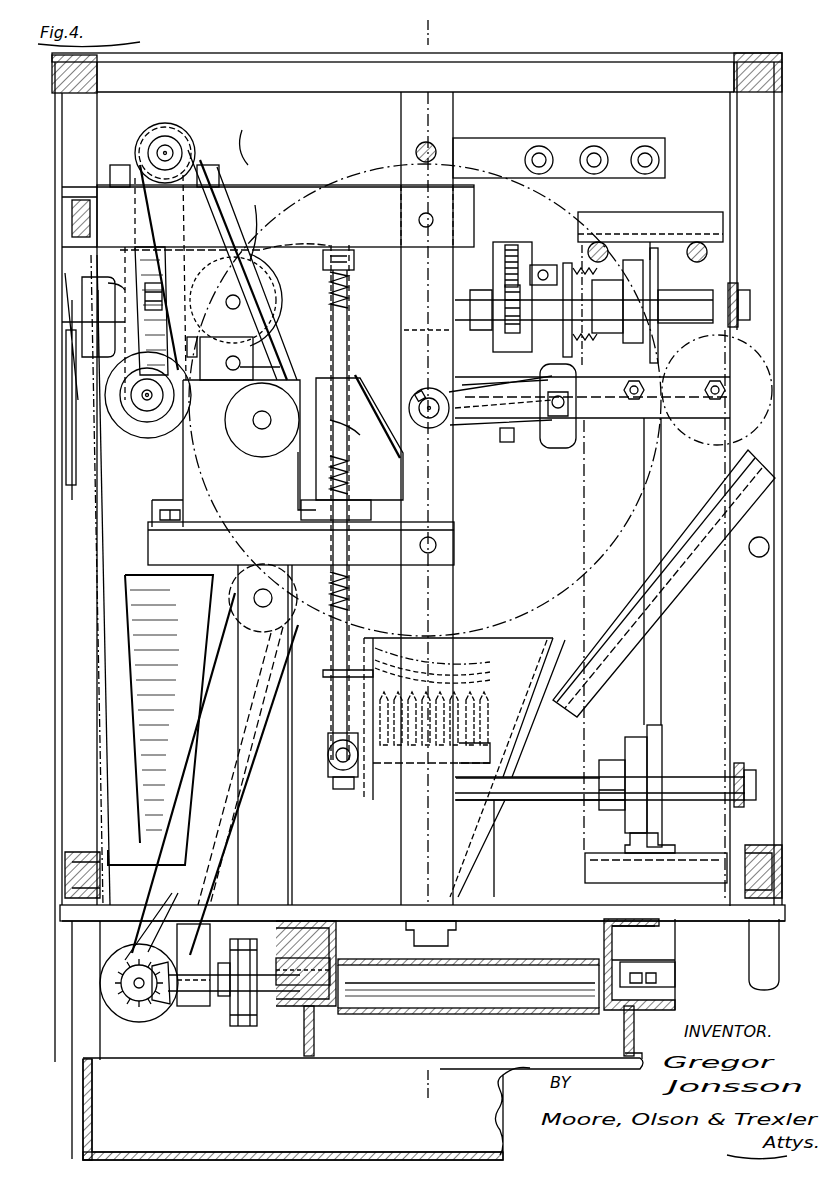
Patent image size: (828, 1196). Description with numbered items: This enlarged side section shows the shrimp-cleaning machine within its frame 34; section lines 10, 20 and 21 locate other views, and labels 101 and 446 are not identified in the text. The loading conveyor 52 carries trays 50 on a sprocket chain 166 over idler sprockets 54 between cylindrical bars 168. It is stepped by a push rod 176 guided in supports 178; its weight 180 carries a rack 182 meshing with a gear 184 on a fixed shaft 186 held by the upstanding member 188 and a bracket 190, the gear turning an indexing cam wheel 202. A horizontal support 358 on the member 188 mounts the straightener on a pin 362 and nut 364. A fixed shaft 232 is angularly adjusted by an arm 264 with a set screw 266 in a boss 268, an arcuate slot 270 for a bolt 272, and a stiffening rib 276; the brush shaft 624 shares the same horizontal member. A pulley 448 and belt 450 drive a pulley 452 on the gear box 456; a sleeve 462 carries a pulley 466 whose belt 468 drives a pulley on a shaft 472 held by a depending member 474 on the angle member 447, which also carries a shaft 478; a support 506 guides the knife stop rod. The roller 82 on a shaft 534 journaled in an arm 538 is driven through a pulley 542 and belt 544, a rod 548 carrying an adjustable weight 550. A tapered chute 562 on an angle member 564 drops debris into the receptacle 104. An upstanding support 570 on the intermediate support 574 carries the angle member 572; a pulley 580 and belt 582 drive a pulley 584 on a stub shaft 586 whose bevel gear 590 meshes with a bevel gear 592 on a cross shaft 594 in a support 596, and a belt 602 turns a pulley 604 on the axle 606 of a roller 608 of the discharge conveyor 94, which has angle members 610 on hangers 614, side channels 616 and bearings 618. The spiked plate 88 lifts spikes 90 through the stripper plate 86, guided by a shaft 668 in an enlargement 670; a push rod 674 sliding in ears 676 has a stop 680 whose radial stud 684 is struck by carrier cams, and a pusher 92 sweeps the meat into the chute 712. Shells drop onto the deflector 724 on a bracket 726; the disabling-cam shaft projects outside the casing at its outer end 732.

The section line 10- 10 is at (426, 28).
The section line 20- 20 is at (582, 252).
The section line 21- 21 is at (705, 332).
The frame 34 is at (604, 58).
The cross bar 50 is at (740, 224).
The side plate 52 is at (730, 205).
The gear 54 is at (662, 745).
The pulley 82 is at (122, 415).
The magazine guide 86 is at (490, 662).
The cartridge block 88 is at (500, 748).
The guide rail 90 is at (482, 700).
The magazine 92 is at (505, 640).
The shaft 94 is at (472, 960).
The cam circle 101 is at (760, 425).
The base 104 is at (105, 1132).
The bearing block 166 is at (650, 242).
The bolt 168 is at (594, 245).
The gear housing 176 is at (520, 245).
The mounting plate 178 is at (512, 178).
The shaft 180 is at (470, 262).
The pinion 182 is at (518, 252).
The gear 184 is at (556, 325).
The bearing 186 is at (468, 298).
The plate 188 is at (400, 172).
The nut 190 is at (745, 285).
The clutch 202 is at (621, 305).
The support 232 is at (432, 386).
The arm 264 is at (478, 430).
The key 266 is at (428, 408).
The pivot 268 is at (430, 428).
The slide block 270 is at (545, 445).
The arm edge 272 is at (548, 390).
The pin 276 is at (505, 440).
The mounting block 358 is at (616, 138).
The bolt 362 is at (648, 152).
The washer 364 is at (660, 160).
The arm 446 is at (226, 148).
The link 447 is at (250, 172).
The pulley 448 is at (166, 140).
The plate 450 is at (100, 186).
The bracket 452 is at (300, 450).
The block 456 is at (184, 470).
The belt 462 is at (176, 142).
The belt 466 is at (142, 125).
The link 468 is at (262, 200).
The bracket 472 is at (265, 290).
The cam 474 is at (290, 212).
The guide 478 is at (262, 370).
The block 506 is at (74, 203).
The pulley 534 is at (140, 395).
The plate 538 is at (80, 238).
The bar 542 is at (78, 435).
The arm 544 is at (100, 330).
The bracket 548 is at (140, 262).
The spring 550 is at (140, 296).
The lever 562 is at (137, 695).
The rod 564 is at (95, 525).
The rod 570 is at (236, 812).
The plate 572 is at (383, 566).
The plate 574 is at (532, 895).
The lever 580 is at (250, 618).
The weight 582 is at (200, 675).
The belt 584 is at (178, 905).
The bevel gear 586 is at (125, 983).
The bevel pinion 590 is at (120, 995).
The shaft 592 is at (152, 1000).
The collar 594 is at (222, 1000).
The bearing 596 is at (200, 1008).
The gear 602 is at (244, 1030).
The bracket 604 is at (300, 1060).
The plate 606 is at (278, 925).
The housing 608 is at (378, 1000).
The bracket 610 is at (325, 1060).
The bearing housing 614 is at (278, 910).
The column 616 is at (400, 870).
The bolt 618 is at (350, 262).
The bar 624 is at (722, 392).
The nut 668 is at (335, 765).
The roller 670 is at (328, 755).
The rod 674 is at (330, 722).
The spring 676 is at (352, 392).
The cam edge 680 is at (340, 460).
The pulley 684 is at (262, 414).
The cam plate 712 is at (530, 730).
The rod 724 is at (645, 598).
The plate 726 is at (693, 575).
The pin 732 is at (412, 136).